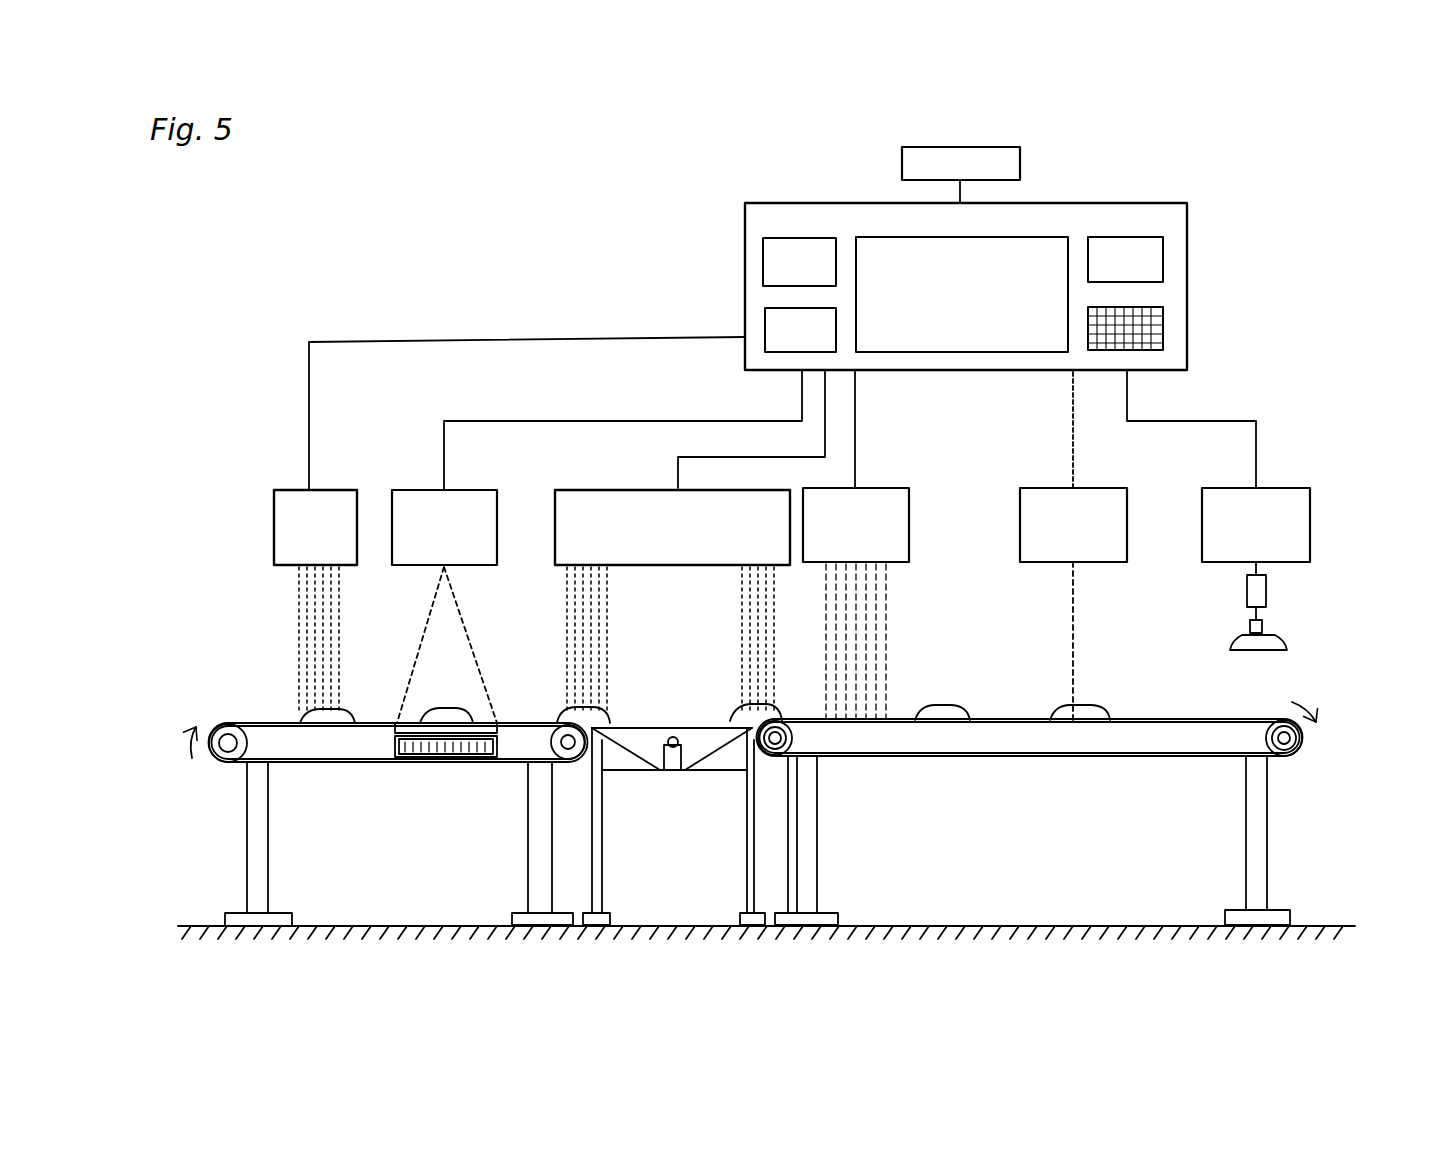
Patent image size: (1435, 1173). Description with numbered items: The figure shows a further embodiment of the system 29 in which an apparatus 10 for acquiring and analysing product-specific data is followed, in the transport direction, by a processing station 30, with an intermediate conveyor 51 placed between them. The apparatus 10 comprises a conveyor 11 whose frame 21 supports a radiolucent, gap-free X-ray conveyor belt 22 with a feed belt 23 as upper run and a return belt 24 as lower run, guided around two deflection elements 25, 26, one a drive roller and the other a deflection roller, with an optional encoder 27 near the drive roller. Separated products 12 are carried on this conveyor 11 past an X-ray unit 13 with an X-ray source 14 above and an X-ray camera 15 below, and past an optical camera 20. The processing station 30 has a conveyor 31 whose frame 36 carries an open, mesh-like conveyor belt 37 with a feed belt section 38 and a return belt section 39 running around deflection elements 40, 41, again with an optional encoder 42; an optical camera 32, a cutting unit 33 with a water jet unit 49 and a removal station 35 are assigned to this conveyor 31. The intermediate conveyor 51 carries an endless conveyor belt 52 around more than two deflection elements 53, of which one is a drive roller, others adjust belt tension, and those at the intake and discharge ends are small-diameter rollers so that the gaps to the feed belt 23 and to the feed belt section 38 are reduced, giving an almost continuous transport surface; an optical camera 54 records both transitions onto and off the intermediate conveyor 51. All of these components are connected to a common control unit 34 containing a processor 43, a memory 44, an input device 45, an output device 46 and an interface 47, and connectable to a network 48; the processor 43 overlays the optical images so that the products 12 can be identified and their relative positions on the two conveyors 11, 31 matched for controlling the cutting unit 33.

The apparatus 10 is at (390, 305).
The conveyor 11 is at (367, 868).
The products 12 is at (303, 715).
The X-ray unit 13 is at (405, 465).
The X-ray source 14 is at (482, 490).
The X-ray camera 15 is at (457, 752).
The optical camera 20 is at (274, 505).
The frame 21 is at (355, 887).
The X-ray conveyor belt 22 is at (504, 766).
The feed belt 23 is at (520, 718).
The return belt 24 is at (298, 765).
The deflection element 25 is at (680, 797).
The deflection element 26 is at (217, 753).
The encoder 27 is at (568, 748).
The system 29 is at (1322, 225).
The processing station 30 is at (1264, 363).
The conveyor 31 is at (1280, 768).
The optical camera 32 is at (909, 515).
The cutting unit 33 is at (1127, 507).
The control unit 34 is at (745, 212).
The removal station 35 is at (1310, 500).
The frame 36 is at (1276, 865).
The conveyor belt 37 is at (1200, 762).
The feed belt section 38 is at (1203, 718).
The return belt section 39 is at (1096, 817).
The deflection element 40 is at (1284, 740).
The deflection element 41 is at (773, 755).
The encoder 42 is at (1288, 745).
The processor 43 is at (978, 312).
The memory 44 is at (763, 258).
The input device 45 is at (1163, 330).
The output device 46 is at (1163, 248).
The interface 47 is at (765, 332).
The network 48 is at (1008, 147).
The water jet unit 49 is at (1120, 565).
The intermediate conveyor 51 is at (688, 772).
The conveyor belt 52 is at (667, 737).
The deflection elements 53 is at (610, 714).
The optical camera 54 is at (580, 490).